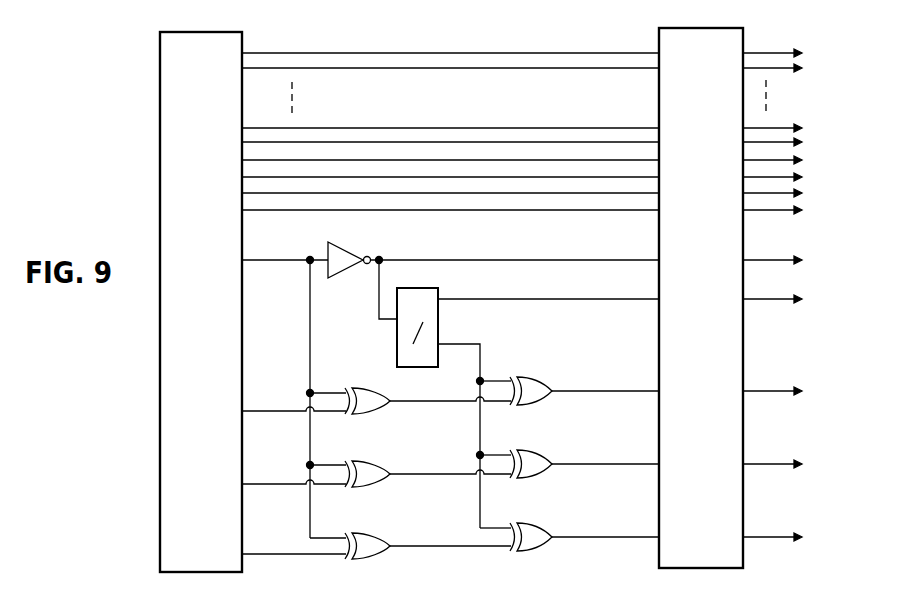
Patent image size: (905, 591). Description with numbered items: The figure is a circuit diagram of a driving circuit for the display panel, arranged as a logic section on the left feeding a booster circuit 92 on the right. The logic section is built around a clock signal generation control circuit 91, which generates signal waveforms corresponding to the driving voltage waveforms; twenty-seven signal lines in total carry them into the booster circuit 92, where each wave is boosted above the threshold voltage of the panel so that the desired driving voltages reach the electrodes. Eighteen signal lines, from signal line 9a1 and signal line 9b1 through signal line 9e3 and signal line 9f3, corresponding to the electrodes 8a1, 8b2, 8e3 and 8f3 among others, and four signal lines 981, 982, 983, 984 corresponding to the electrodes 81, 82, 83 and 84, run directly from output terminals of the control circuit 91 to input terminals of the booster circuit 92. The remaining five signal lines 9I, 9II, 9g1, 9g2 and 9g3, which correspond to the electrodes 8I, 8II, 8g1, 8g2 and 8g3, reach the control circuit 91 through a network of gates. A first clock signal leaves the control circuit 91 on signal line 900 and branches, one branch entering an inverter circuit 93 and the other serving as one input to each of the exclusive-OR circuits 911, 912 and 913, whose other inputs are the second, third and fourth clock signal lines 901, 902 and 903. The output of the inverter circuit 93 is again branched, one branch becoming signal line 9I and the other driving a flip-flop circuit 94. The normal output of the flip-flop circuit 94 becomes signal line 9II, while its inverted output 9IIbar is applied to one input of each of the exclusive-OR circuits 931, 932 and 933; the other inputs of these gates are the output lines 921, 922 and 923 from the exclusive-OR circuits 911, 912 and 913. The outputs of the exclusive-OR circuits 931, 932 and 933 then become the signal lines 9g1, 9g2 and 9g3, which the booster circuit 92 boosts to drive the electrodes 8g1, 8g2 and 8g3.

The clock signal generation control circuit 91 is at (160, 52).
The booster circuit 92 is at (659, 38).
The inverter circuit 93 is at (346, 257).
The flip-flop circuit 94 is at (440, 297).
The signal line 900 is at (270, 259).
The second clock signal line 901 is at (267, 410).
The third clock signal line 902 is at (263, 483).
The fourth clock signal line 903 is at (263, 553).
The exclusive-OR circuit 911 is at (373, 412).
The exclusive-OR circuit 912 is at (372, 486).
The exclusive-OR circuit 913 is at (383, 556).
The output line 921 is at (410, 401).
The output line 922 is at (430, 473).
The output line 923 is at (427, 545).
The exclusive-OR circuit 931 is at (540, 403).
The exclusive-OR circuit 932 is at (540, 477).
The exclusive-OR circuit 933 is at (540, 552).
The signal line 981 is at (422, 159).
The signal line 982 is at (547, 176).
The signal line 983 is at (415, 194).
The signal line 984 is at (470, 211).
The signal line 9a1 is at (268, 52).
The signal line 9b1 is at (357, 67).
The signal line 9e3 is at (372, 127).
The signal line 9f3 is at (487, 141).
The signal line 9I is at (547, 259).
The signal line 9II is at (530, 298).
The inverted output of the flip-flop circuit 9IIbar is at (520, 340).
The signal line 9g1 is at (589, 389).
The signal line 9g2 is at (600, 462).
The signal line 9g3 is at (610, 535).
The electrode 8a1 is at (790, 52).
The electrode 8b2 is at (790, 68).
The electrode 8e3 is at (790, 127).
The electrode 8f3 is at (787, 142).
The electrode 81 is at (784, 158).
The electrode 82 is at (784, 175).
The electrode 83 is at (784, 192).
The electrode 84 is at (784, 209).
The electrode 8I is at (782, 259).
The electrode 8II is at (784, 298).
The electrode 8g1 is at (790, 390).
The electrode 8g2 is at (790, 463).
The electrode 8g3 is at (790, 536).